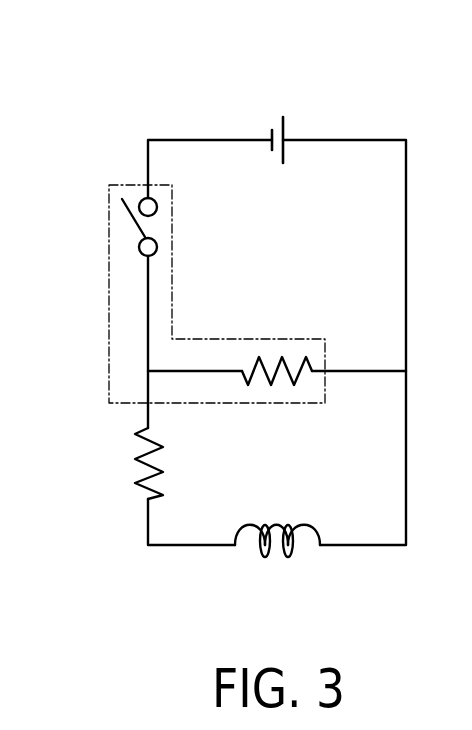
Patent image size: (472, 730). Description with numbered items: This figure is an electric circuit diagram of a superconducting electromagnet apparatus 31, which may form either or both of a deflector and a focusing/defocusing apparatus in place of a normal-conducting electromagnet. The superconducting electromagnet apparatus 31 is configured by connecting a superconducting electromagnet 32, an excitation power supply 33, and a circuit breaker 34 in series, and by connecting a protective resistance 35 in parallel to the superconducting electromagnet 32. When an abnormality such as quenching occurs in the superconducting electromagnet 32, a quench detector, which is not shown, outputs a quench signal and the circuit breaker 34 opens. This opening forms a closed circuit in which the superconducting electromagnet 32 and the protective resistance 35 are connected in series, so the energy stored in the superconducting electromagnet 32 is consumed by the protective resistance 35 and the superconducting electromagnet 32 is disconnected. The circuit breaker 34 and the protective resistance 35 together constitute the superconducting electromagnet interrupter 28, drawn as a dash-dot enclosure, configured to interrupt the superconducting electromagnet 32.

The superconducting electromagnet apparatus 31 is at (180, 89).
The excitation power supply 33 is at (284, 123).
The circuit breaker 34 is at (122, 213).
The superconducting electromagnet interrupter 28 is at (109, 326).
The protective resistance 35 is at (281, 358).
The superconducting electromagnet 32 is at (289, 558).